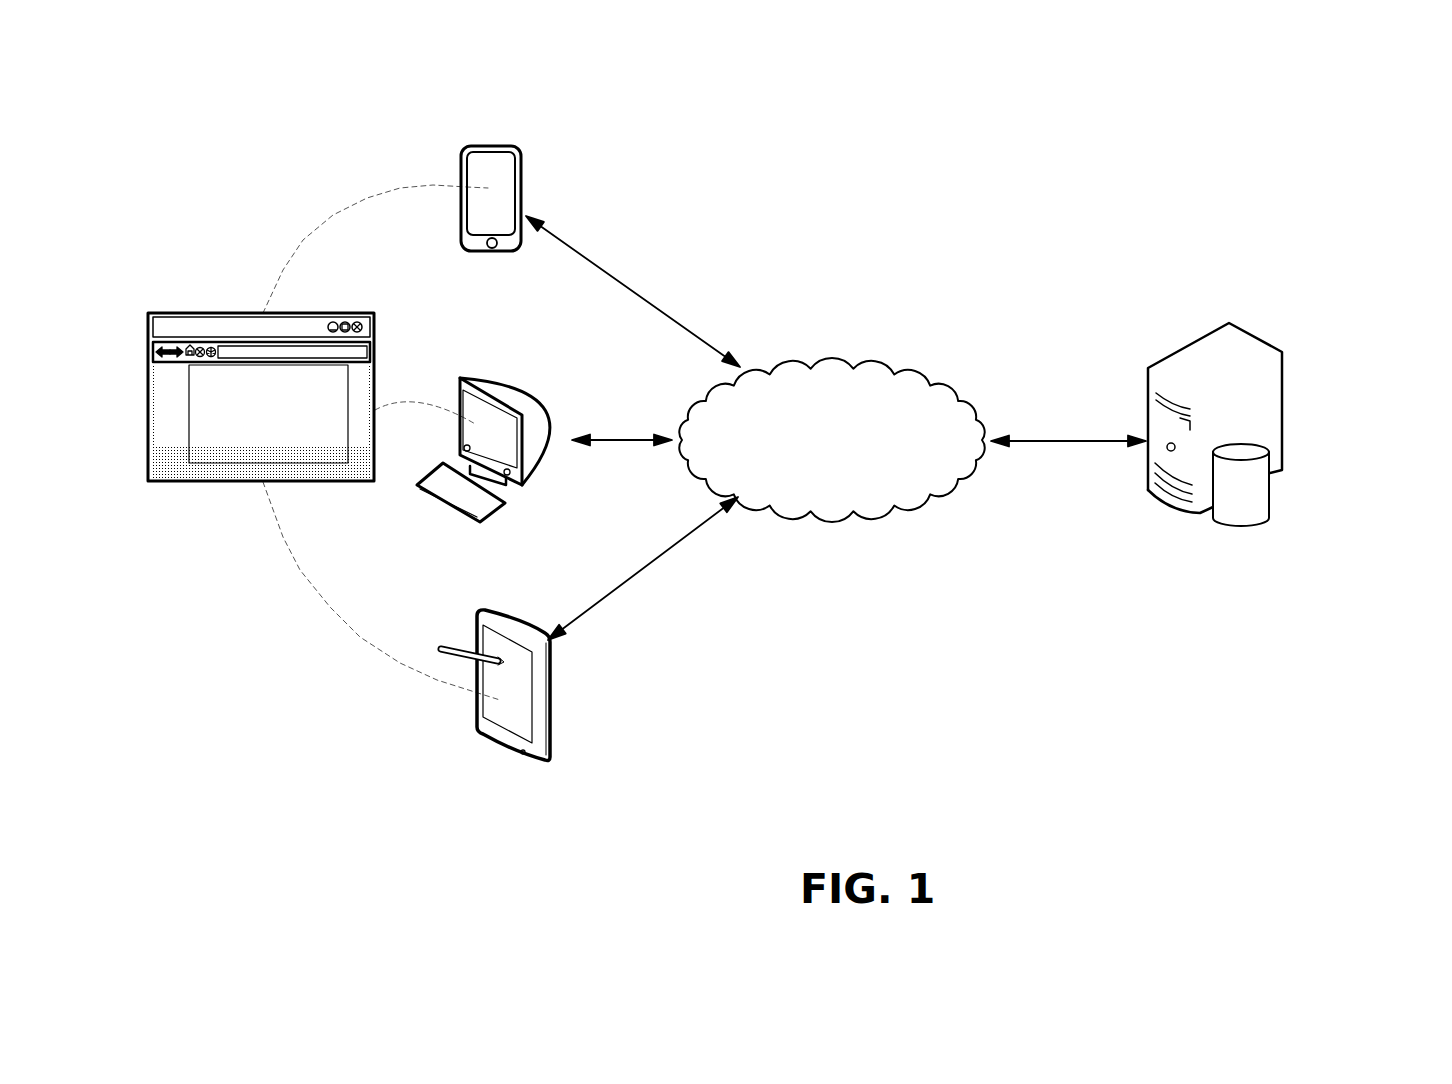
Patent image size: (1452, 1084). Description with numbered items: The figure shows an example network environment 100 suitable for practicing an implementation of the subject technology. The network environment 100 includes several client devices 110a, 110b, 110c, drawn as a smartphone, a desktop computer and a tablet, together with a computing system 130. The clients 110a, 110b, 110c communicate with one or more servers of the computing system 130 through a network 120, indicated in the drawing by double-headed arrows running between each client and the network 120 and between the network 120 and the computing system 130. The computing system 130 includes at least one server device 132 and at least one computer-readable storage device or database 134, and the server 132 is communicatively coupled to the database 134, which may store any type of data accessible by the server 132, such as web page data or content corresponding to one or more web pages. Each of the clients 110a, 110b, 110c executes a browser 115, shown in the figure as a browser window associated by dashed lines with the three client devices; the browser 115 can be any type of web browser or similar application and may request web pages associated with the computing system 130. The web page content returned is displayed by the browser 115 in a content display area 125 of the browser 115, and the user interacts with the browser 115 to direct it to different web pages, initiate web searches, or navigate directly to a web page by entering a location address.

The network environment 100 is at (1112, 128).
The client device 110a is at (540, 180).
The client device 110b is at (514, 434).
The client device 110c is at (538, 708).
The browser 115 is at (261, 397).
The network 120 is at (831, 440).
The content display area 125 is at (268, 414).
The computing system 130 is at (1284, 438).
The server device 132 is at (1245, 407).
The database 134 is at (1273, 510).